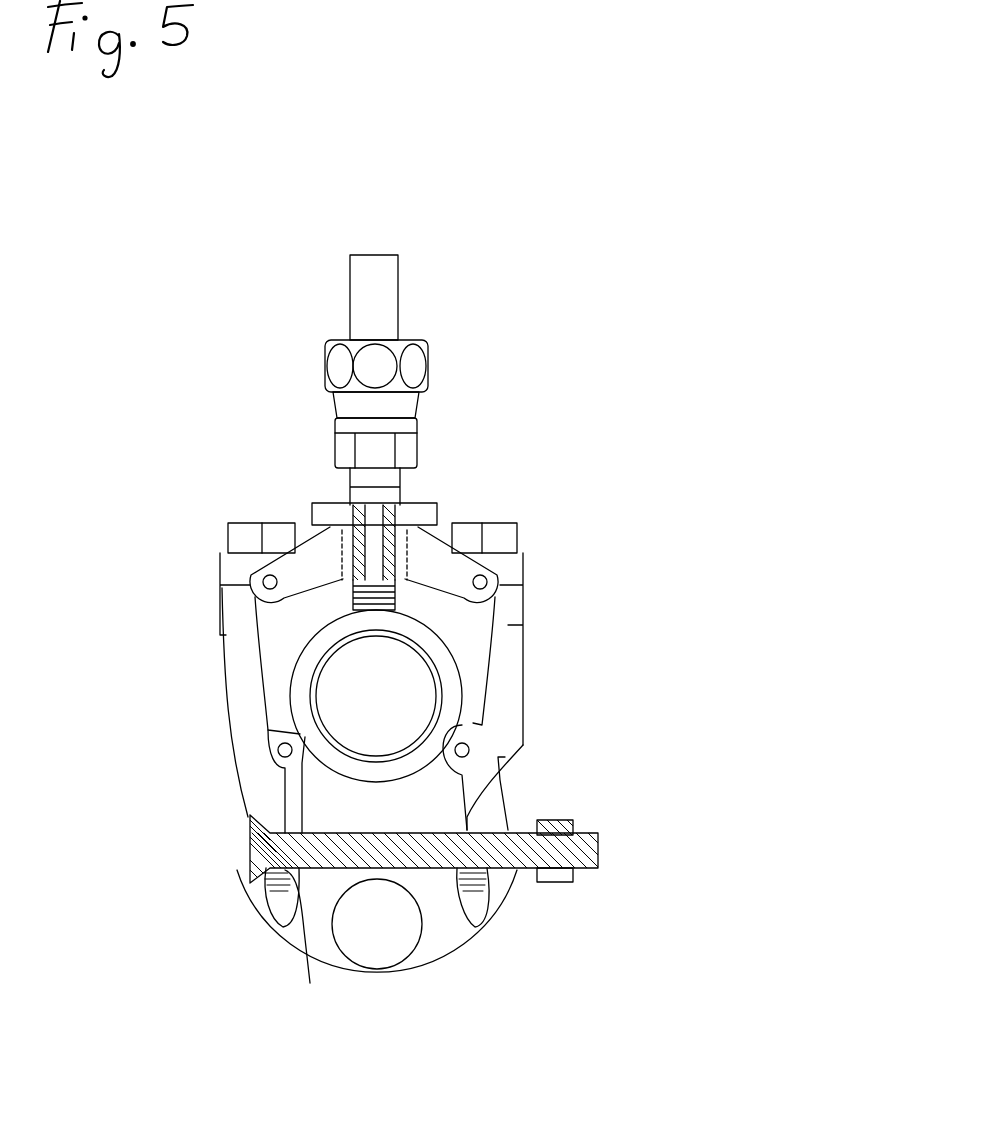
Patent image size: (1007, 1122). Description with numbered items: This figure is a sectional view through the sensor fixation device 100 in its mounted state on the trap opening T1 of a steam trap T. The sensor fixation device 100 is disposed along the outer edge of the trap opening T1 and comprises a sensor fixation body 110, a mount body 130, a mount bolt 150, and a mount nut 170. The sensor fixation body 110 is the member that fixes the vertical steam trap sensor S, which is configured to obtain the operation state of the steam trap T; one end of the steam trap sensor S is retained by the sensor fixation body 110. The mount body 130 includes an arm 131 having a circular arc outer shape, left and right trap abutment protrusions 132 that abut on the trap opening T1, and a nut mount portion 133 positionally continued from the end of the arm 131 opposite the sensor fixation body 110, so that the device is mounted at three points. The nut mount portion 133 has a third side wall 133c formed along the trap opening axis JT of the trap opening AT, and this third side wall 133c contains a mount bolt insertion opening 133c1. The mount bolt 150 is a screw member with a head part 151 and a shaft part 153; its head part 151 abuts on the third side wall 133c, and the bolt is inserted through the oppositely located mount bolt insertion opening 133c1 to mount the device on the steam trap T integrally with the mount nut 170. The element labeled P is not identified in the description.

The sensor fixation device 100 is at (472, 435).
The sensor fixation body 110 is at (430, 547).
The mount body 130 is at (255, 780).
The arm 131 is at (508, 625).
The trap abutment protrusion 132 is at (460, 722).
The nut mount portion 133 is at (523, 745).
The third side wall 133c is at (260, 903).
The mount bolt insertion opening 133c1 is at (266, 877).
The mount bolt 150 is at (508, 1033).
The head part 151 is at (405, 855).
The shaft part 153 is at (327, 867).
The mount nut 170 is at (555, 882).
The steam trap sensor S is at (333, 447).
The pin P is at (270, 582).
The trap opening T1 is at (330, 637).
The trap opening axis JT is at (373, 693).
The trap opening AT is at (312, 698).
The steam trap T is at (293, 940).